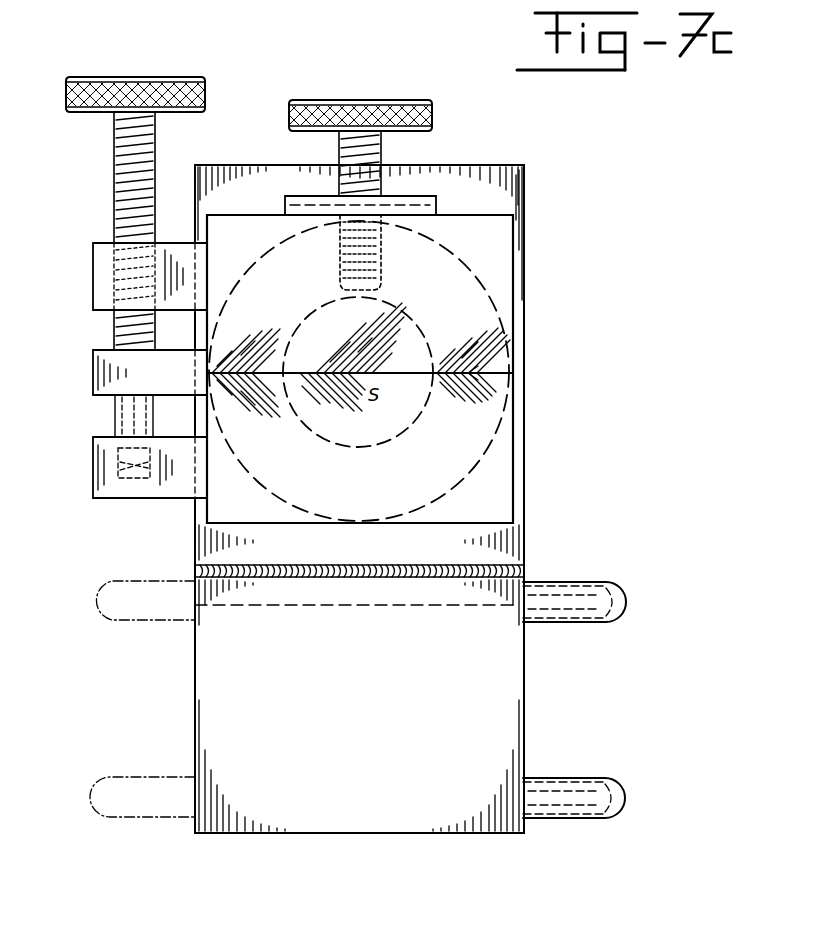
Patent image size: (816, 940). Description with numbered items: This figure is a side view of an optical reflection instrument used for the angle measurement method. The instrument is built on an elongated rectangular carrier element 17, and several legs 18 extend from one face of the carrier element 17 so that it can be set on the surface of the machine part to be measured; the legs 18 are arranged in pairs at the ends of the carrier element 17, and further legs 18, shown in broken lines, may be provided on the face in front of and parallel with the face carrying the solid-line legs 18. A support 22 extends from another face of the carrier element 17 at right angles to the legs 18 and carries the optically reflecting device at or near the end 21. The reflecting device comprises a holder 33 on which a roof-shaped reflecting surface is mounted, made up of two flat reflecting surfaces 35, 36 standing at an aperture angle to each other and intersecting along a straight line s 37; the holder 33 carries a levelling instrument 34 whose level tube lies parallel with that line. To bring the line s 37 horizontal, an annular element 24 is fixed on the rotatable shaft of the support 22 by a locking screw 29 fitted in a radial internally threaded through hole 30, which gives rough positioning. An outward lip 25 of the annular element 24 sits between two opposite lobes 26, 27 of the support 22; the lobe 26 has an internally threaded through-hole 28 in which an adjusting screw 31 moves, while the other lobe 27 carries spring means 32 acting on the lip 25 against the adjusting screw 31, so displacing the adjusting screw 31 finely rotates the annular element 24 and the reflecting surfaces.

The carrier element 17 is at (252, 835).
The legs 18 is at (143, 606).
The end of the carrier element 21 is at (357, 808).
The support 22 is at (507, 172).
The annular element 24 is at (485, 397).
The lip 25 is at (108, 374).
The lobe 26 is at (108, 263).
The lobe 27 is at (105, 483).
The internally threaded through-hole 28 is at (118, 281).
The locking screw 29 is at (370, 100).
The internally threaded through hole 30 is at (382, 262).
The adjusting screw 31 is at (152, 86).
The spring means 32 is at (110, 466).
The holder 33 is at (513, 243).
The levelling instrument 34 is at (428, 207).
The flat reflecting surface 35 is at (478, 313).
The flat reflecting surface 36 is at (495, 470).
The straight line s 37 is at (470, 373).